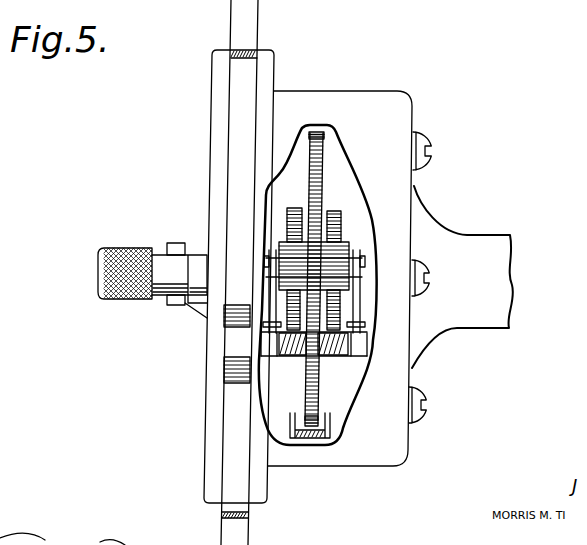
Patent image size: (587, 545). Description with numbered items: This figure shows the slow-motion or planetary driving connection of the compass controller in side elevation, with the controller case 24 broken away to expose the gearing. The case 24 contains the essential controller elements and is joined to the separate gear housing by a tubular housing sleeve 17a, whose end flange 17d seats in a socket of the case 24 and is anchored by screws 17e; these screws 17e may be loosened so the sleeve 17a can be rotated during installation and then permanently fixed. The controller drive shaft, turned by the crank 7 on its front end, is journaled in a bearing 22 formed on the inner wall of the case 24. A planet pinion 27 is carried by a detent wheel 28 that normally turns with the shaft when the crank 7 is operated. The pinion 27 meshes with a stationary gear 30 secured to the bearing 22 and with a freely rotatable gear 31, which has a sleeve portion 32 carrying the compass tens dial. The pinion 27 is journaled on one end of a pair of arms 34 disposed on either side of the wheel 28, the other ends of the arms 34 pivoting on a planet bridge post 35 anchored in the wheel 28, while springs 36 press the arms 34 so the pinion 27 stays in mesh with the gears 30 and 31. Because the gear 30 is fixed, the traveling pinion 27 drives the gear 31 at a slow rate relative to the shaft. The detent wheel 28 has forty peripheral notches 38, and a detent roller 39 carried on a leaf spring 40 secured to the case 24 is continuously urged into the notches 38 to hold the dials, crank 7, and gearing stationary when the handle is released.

The crank 7 is at (170, 282).
The tubular housing sleeve 17a is at (478, 257).
The flange 17d is at (418, 188).
The screws 17e is at (428, 146).
The bearing 22 is at (363, 318).
The controller case 24 is at (365, 100).
The planet pinion 27 is at (283, 244).
The detent wheel 28 is at (322, 147).
The stationary gear 30 is at (340, 213).
The freely rotatable gear 31 is at (285, 210).
The sleeve portion 32 is at (275, 240).
The arms 34 is at (270, 300).
The planet bridge post 35 is at (322, 360).
The springs 36 is at (294, 333).
The peripheral notches 38 is at (315, 131).
The detent roller 39 is at (321, 425).
The leaf spring 40 is at (315, 425).